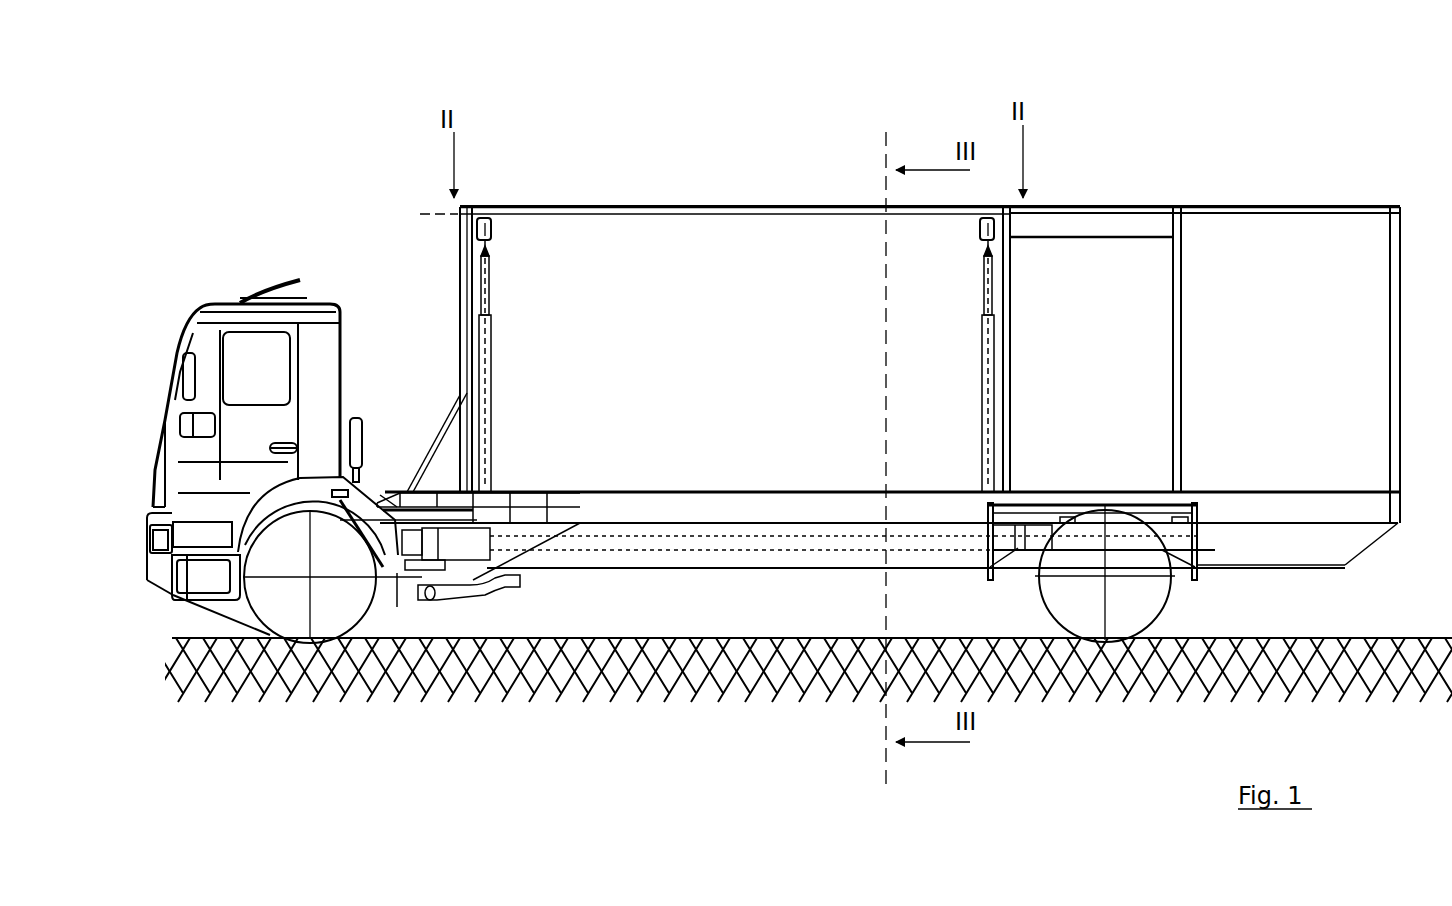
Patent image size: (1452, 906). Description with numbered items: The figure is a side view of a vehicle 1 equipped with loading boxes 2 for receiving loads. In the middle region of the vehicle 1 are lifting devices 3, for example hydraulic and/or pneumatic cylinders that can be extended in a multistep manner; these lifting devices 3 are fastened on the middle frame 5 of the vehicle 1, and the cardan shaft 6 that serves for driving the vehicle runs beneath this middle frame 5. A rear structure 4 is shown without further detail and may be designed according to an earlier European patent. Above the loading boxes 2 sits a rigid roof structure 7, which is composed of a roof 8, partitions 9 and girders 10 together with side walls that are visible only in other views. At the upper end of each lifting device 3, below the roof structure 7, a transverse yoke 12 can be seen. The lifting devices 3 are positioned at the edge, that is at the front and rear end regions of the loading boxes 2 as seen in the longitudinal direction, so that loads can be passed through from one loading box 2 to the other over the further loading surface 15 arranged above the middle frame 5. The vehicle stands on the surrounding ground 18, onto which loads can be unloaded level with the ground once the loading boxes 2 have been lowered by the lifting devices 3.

The vehicle 1 is at (778, 108).
The loading box 2 is at (671, 339).
The lifting device 3 is at (490, 286).
The rear structure 4 is at (1344, 402).
The middle frame 5 is at (726, 574).
The cardan shaft 6 is at (600, 542).
The roof structure 7 is at (621, 200).
The roof 8 is at (1327, 205).
The partition 9 is at (468, 307).
The girder 10 is at (462, 334).
The transverse yoke 12 is at (492, 212).
The loading surface 15 is at (713, 488).
The ground 18 is at (1320, 692).